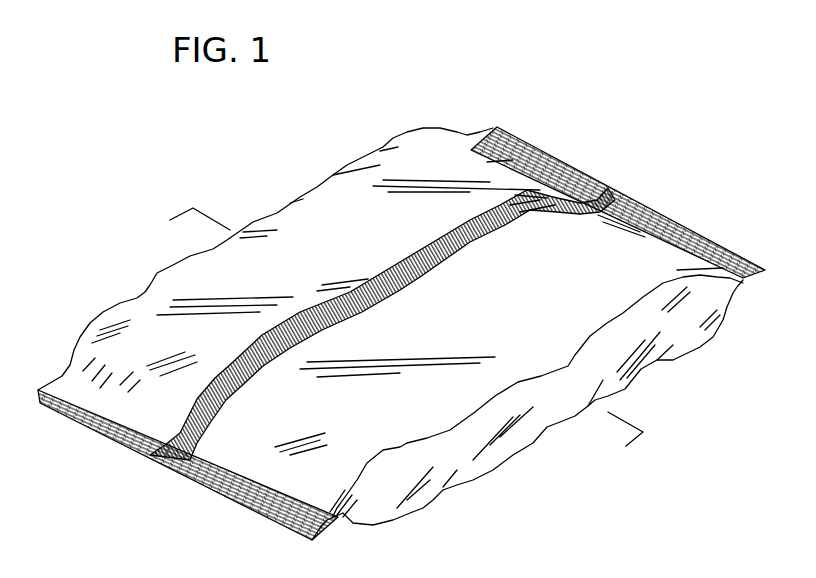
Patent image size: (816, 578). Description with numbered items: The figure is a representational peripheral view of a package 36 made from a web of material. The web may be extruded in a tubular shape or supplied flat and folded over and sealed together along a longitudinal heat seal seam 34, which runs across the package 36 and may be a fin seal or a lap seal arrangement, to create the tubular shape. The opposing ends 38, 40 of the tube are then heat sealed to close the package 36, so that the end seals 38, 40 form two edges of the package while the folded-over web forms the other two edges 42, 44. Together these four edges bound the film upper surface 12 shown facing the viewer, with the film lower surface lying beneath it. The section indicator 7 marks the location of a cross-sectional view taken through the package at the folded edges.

The flexible pouch / bag 12 is at (422, 158).
The central seal strip 34 is at (458, 230).
The top edge of pouch 36 is at (268, 202).
The first end seal band 38 is at (653, 210).
The second end seal band 40 is at (200, 479).
The front panel 42 is at (315, 187).
The side gusset panel 44 is at (613, 377).
The section line for FIG. 7 is at (170, 226).